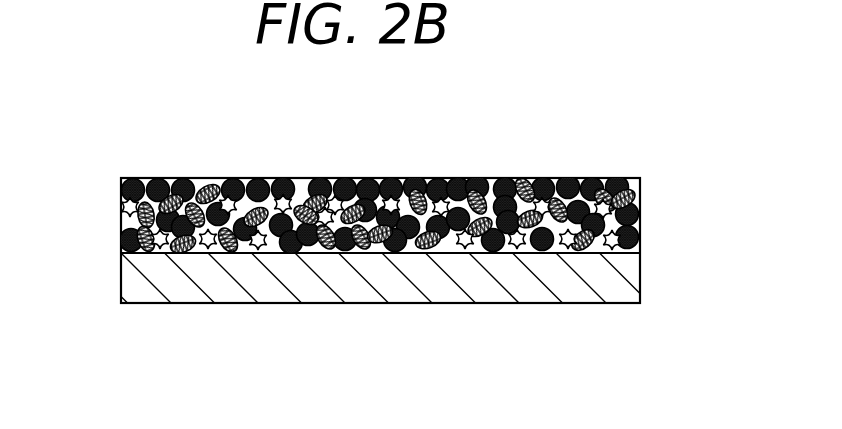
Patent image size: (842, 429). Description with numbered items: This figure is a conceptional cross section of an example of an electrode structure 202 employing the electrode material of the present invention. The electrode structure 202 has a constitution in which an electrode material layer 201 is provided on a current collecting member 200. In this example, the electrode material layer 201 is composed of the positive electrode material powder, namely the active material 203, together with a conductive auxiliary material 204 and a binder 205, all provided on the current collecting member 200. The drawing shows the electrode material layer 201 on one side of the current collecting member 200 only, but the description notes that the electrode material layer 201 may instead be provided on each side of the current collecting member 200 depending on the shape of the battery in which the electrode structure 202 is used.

The current collecting member 200 is at (523, 293).
The electrode material layer 201 is at (657, 183).
The electrode structure 202 is at (685, 220).
The active material 203 is at (132, 182).
The conductive auxiliary material 204 is at (395, 192).
The binder 205 is at (453, 237).